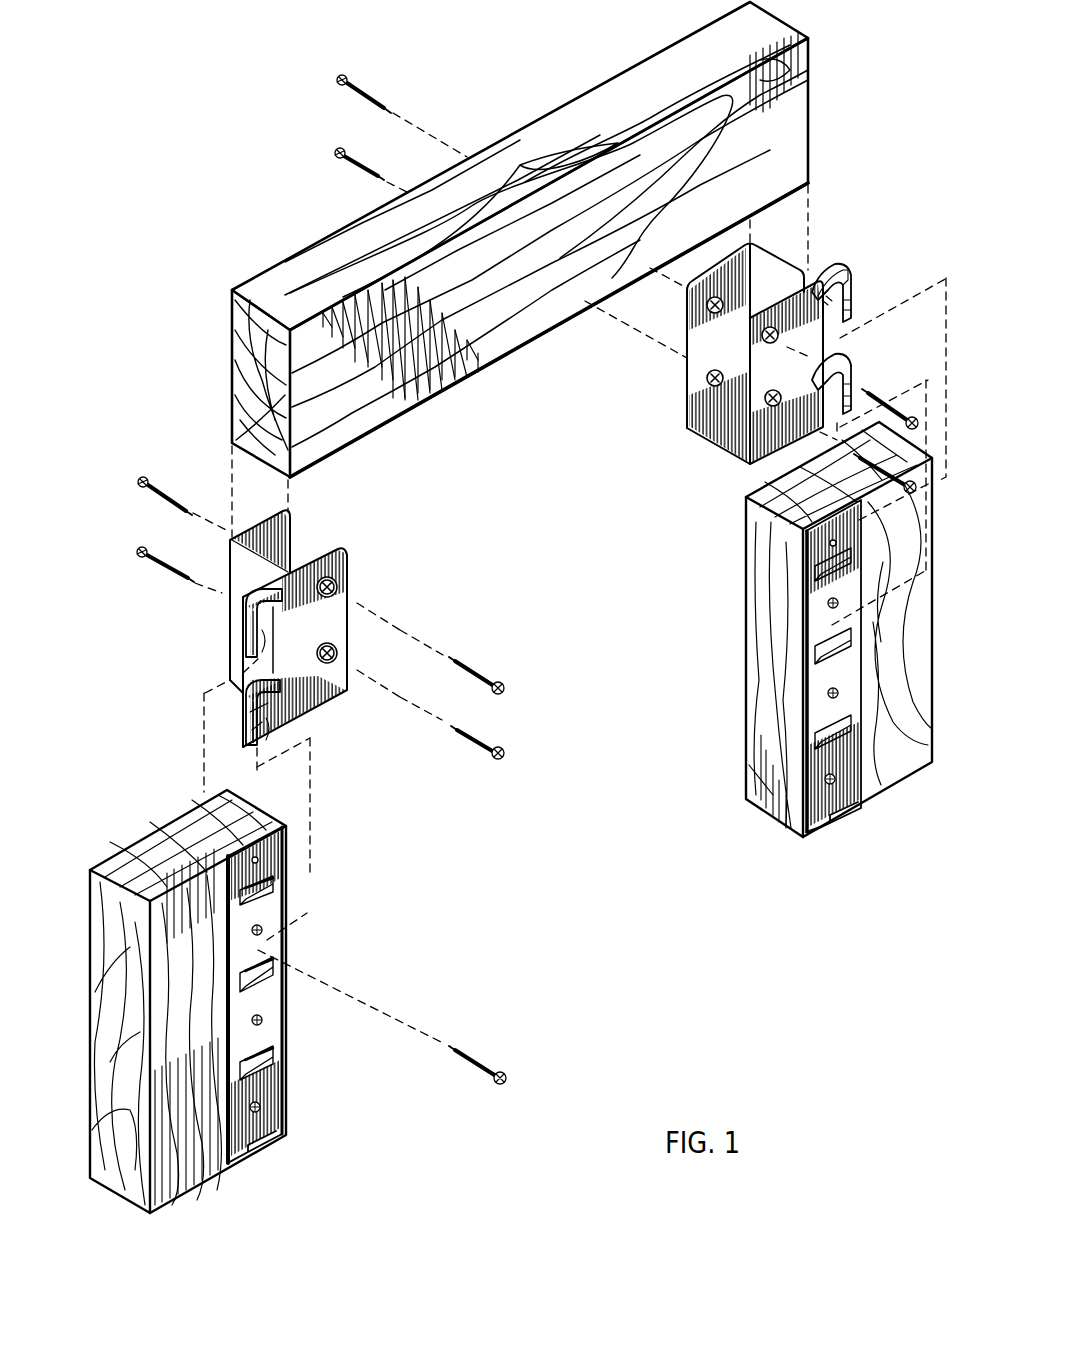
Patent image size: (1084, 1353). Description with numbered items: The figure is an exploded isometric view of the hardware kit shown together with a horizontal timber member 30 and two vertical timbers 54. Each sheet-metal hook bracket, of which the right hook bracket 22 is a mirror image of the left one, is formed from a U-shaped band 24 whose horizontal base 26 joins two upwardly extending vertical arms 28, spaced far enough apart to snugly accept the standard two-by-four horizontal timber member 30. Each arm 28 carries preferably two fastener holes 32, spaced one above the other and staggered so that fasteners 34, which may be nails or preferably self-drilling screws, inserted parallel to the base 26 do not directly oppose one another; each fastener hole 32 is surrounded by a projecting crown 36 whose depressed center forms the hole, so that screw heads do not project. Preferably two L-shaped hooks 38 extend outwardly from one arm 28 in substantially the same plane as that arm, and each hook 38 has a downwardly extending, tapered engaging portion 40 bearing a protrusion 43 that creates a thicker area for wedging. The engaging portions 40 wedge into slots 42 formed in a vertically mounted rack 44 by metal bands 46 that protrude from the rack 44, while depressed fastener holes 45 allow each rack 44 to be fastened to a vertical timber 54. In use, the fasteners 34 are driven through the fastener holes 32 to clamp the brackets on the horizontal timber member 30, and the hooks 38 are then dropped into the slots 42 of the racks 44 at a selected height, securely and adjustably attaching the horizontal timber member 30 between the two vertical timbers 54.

The right hook bracket 22 is at (770, 457).
The U-shaped band 24 is at (263, 515).
The horizontal base 26 is at (715, 448).
The vertical arm 28 is at (290, 543).
The horizontal timber member 30 is at (558, 107).
The fastener hole 32 is at (337, 582).
The fastener 34 is at (162, 495).
The projecting crown 36 is at (343, 575).
The L-shaped hook 38 is at (250, 633).
The engaging portion 40 is at (250, 727).
The slot 42 is at (266, 1046).
The protrusion 43 is at (250, 716).
The rack 44 is at (773, 703).
The depressed fastener hole 45 is at (262, 925).
The metal band 46 is at (277, 1056).
The vertical timber 54 is at (746, 545).